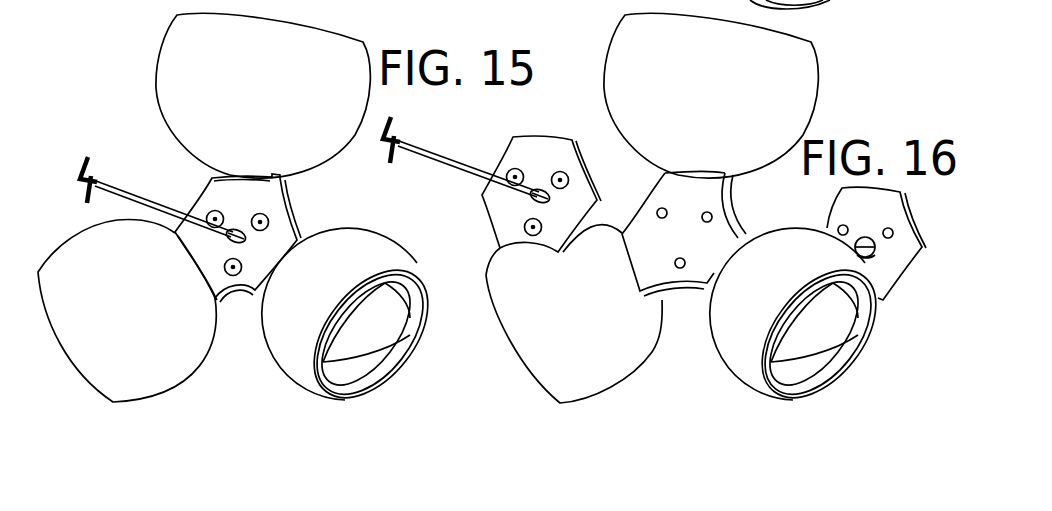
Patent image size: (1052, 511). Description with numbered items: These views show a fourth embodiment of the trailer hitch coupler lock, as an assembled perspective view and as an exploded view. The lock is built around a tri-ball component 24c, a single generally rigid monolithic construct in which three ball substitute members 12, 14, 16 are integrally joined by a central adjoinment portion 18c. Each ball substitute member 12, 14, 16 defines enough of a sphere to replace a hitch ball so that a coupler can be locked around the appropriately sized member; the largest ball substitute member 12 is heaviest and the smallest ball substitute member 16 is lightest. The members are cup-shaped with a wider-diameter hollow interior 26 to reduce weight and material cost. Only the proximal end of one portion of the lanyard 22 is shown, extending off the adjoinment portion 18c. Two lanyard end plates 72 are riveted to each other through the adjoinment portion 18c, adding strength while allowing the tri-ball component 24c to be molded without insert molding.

In FIG. 15, the ball substitute member 12 is at (328, 45).
In FIG. 16, the ball substitute member 12 is at (788, 83).
In FIG. 15, the ball substitute member 14 is at (178, 335).
In FIG. 16, the ball substitute member 14 is at (657, 318).
In FIG. 15, the ball substitute member 16 is at (353, 237).
In FIG. 16, the ball substitute member 16 is at (728, 337).
In FIG. 16, the adjoinment portion 18c is at (675, 189).
In FIG. 15, the lanyard 22 is at (145, 199).
In FIG. 16, the lanyard 22 is at (472, 168).
In FIG. 15, the tri-ball component 24c is at (146, 138).
In FIG. 16, the tri-ball component 24c is at (878, 130).
In FIG. 15, the hollow interior 26 is at (367, 308).
In FIG. 16, the hollow interior 26 is at (798, 323).
In FIG. 15, the lanyard end plate 72 is at (275, 228).
In FIG. 16, the lanyard end plate 72 is at (892, 218).